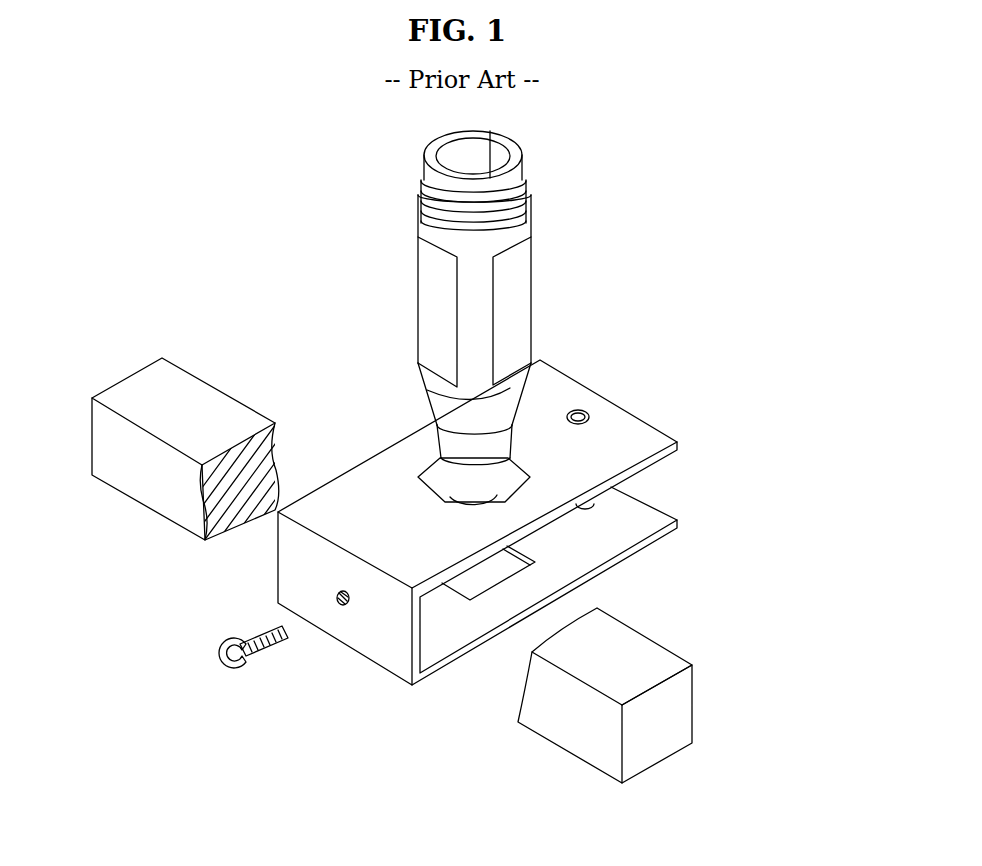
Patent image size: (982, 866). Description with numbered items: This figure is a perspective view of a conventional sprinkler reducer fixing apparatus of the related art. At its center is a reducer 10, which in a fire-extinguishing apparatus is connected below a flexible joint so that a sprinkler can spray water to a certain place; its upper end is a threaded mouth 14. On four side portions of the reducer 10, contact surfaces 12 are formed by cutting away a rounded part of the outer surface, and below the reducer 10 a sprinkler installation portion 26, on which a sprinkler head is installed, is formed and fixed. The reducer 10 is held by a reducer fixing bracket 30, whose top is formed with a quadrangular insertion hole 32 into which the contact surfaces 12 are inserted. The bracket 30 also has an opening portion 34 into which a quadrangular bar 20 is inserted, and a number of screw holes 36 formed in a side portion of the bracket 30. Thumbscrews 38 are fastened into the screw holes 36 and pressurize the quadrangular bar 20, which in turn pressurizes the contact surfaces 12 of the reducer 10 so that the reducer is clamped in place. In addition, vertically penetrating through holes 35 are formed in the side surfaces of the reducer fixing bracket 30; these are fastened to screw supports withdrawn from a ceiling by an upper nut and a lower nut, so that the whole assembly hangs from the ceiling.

The reducer 10 is at (477, 298).
The contact surfaces 12 is at (515, 265).
The threaded bottle mouth 14 is at (527, 188).
The quadrangular bar 20 is at (633, 648).
The sprinkler installation portion 26 is at (432, 440).
The reducer fixing bracket 30 is at (585, 409).
The quadrangular insertion hole 32 is at (535, 485).
The opening portion 34 is at (435, 617).
The through holes 35 is at (590, 507).
The screw holes 36 is at (343, 606).
The thumbscrews 38 is at (222, 652).